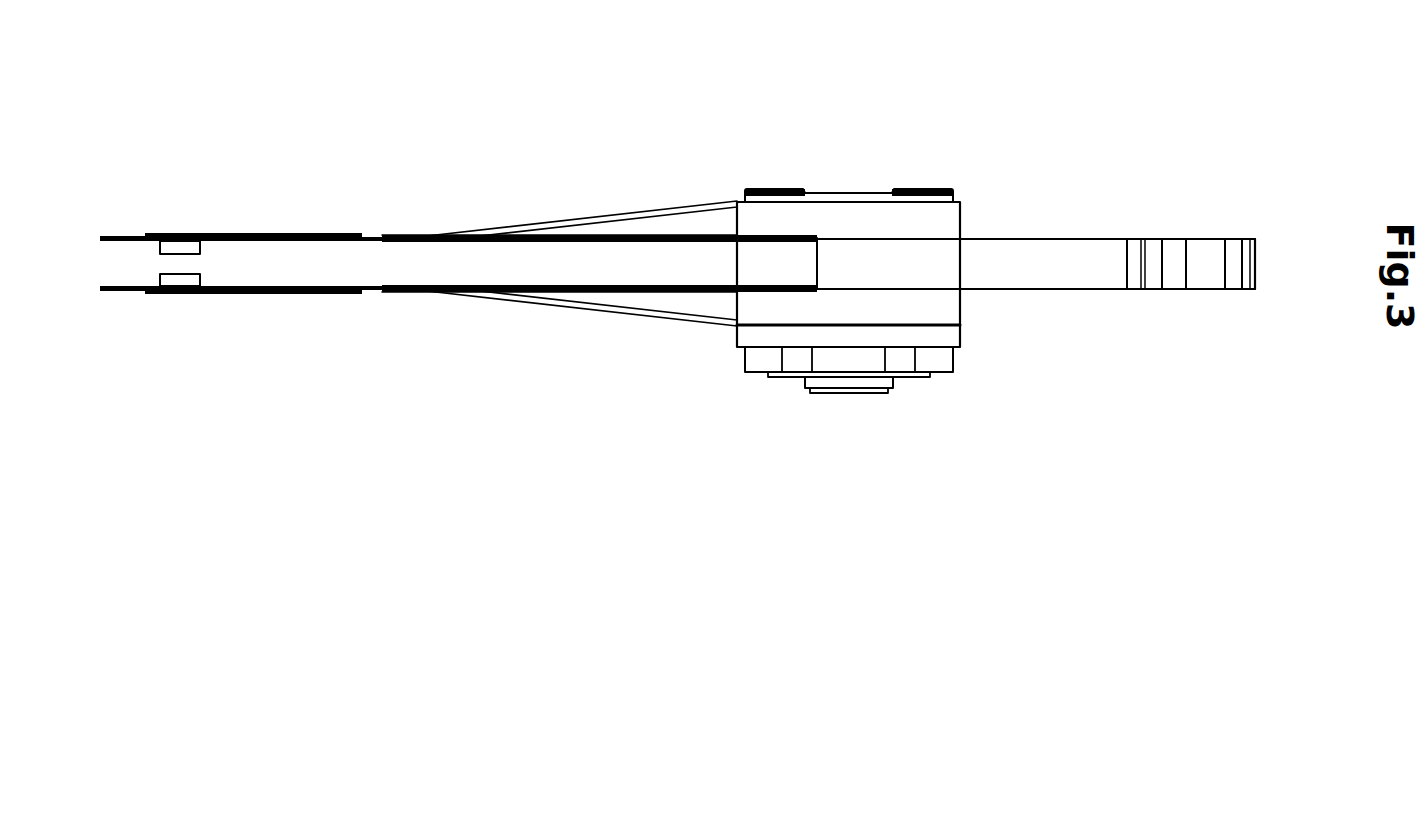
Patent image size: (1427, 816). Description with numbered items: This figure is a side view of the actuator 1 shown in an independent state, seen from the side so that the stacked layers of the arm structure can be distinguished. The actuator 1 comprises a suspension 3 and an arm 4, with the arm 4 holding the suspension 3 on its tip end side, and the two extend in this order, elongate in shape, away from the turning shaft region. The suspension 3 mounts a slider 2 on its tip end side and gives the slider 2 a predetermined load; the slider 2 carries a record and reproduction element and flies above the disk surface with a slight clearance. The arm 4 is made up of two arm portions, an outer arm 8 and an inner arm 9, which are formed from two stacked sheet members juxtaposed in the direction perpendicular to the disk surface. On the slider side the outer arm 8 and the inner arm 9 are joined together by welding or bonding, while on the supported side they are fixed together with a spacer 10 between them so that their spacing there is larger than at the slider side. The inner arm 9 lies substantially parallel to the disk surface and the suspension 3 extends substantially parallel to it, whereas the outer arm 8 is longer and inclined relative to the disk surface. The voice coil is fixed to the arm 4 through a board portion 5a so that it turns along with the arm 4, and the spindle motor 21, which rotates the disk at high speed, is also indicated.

The actuator 1 is at (471, 185).
The slider 2 is at (183, 247).
The suspension 3 is at (279, 236).
The arm 4 is at (588, 132).
The board portion 5a is at (1093, 275).
The outer arm 8 is at (590, 214).
The inner arm 9 is at (672, 236).
The spacer 10 is at (917, 308).
The spindle motor 21 is at (868, 392).